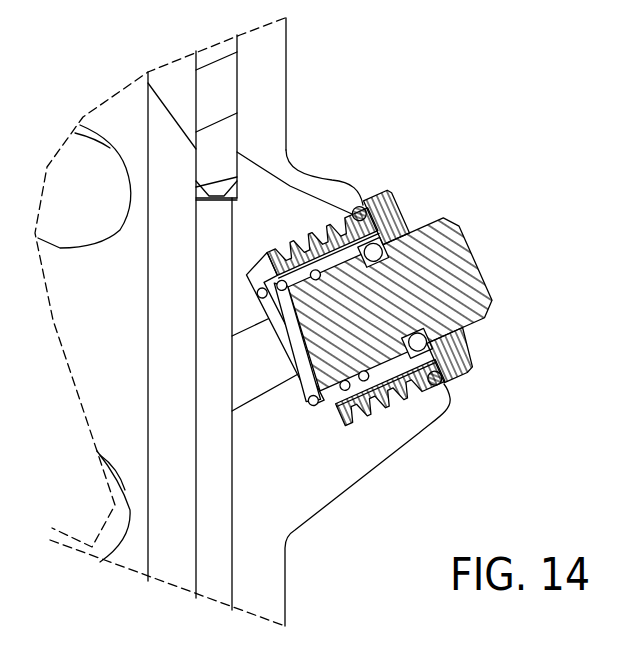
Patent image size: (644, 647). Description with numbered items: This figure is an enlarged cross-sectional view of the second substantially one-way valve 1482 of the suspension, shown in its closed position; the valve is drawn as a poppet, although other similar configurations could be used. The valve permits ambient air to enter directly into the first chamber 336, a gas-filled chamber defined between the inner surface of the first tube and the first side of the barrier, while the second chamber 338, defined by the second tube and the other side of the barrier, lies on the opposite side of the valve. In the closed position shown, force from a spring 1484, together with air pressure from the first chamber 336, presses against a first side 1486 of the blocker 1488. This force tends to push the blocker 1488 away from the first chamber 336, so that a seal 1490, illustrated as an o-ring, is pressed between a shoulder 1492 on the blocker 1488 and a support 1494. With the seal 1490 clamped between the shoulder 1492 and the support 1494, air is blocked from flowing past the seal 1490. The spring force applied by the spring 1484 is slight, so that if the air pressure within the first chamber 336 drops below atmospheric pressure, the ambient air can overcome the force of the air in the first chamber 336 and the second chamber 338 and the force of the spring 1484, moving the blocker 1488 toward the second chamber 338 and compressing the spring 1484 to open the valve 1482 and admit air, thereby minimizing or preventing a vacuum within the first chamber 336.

The first chamber 336 is at (218, 538).
The second chamber 338 is at (129, 307).
The substantially one-way valve 1482 is at (416, 354).
The spring 1484 is at (323, 416).
The first side 1486 is at (325, 378).
The blocker 1488 is at (490, 278).
The seal 1490 is at (462, 376).
The shoulder 1492 is at (383, 250).
The support 1494 is at (470, 348).